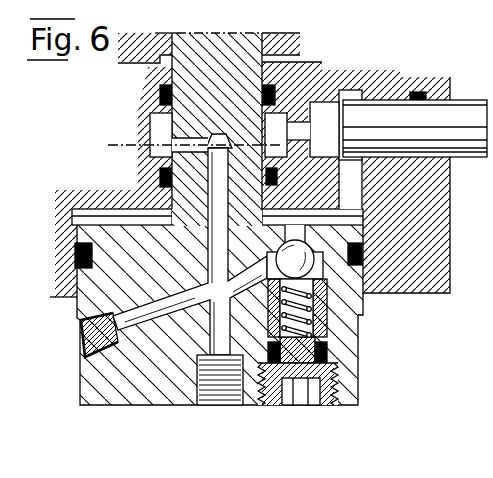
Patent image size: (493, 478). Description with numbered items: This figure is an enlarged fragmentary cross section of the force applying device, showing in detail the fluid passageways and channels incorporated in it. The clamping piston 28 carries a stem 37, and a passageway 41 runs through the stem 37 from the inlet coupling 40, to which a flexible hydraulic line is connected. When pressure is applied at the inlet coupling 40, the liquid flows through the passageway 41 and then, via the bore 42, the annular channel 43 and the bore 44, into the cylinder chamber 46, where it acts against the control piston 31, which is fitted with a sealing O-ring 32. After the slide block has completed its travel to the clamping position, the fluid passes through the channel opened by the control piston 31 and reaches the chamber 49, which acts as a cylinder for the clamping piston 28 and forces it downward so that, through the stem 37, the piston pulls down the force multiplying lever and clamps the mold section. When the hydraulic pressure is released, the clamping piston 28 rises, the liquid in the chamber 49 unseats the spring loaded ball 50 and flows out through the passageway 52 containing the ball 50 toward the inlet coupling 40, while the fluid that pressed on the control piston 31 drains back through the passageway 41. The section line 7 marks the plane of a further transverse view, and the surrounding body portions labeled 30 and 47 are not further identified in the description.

The section line 7- 7 is at (108, 145).
The clamping piston 28 is at (77, 291).
The housing 30 is at (318, 108).
The control piston 31 is at (473, 112).
The sealing O-ring 32 is at (440, 162).
The stem 37 is at (209, 43).
The inlet coupling 40 is at (200, 408).
The passageway 41 is at (217, 330).
The bore 42 is at (157, 157).
The annular channel 43 is at (157, 123).
The bore 44 is at (300, 134).
The cylinder chamber 46 is at (356, 90).
The passage 47 is at (350, 190).
The chamber 49 is at (90, 212).
The ball 50 is at (364, 266).
The passageway 52 is at (247, 270).